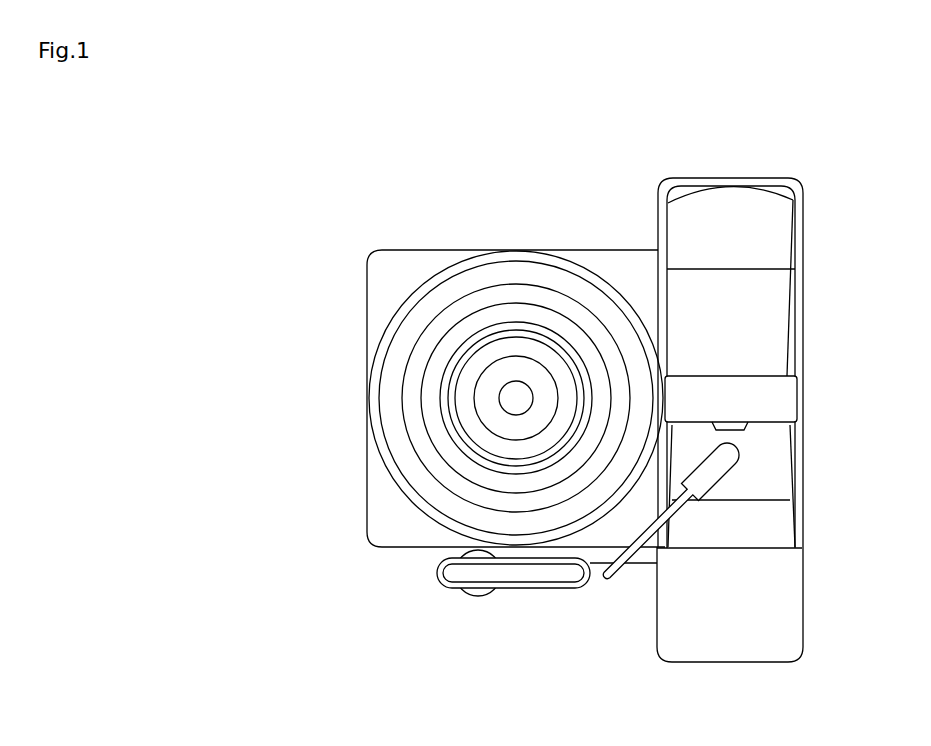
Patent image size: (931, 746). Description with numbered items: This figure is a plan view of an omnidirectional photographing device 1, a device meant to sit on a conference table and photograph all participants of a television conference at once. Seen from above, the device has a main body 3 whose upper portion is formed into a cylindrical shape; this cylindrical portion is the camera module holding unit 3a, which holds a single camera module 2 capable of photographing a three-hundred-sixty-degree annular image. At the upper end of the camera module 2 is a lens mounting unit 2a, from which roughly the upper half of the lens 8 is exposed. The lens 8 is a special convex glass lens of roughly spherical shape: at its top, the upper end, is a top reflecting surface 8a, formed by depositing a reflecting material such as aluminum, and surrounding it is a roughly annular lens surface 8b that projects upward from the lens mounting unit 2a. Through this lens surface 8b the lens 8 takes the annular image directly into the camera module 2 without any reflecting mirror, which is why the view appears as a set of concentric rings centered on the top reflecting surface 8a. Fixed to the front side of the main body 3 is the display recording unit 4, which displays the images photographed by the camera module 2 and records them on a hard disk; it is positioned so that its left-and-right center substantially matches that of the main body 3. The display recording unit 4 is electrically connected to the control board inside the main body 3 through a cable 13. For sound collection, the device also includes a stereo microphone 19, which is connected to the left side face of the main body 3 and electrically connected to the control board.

The omnidirectional photographing device 1 is at (790, 141).
The camera module 2 is at (473, 329).
The lens mounting unit 2a is at (448, 407).
The main body 3 is at (393, 274).
The camera module holding unit 3a is at (429, 275).
The display recording unit 4 is at (797, 358).
The lens 8 is at (581, 195).
The top reflecting surface 8a is at (522, 398).
The lens surface 8b is at (508, 373).
The cable 13 is at (637, 550).
The stereo microphone 19 is at (527, 575).